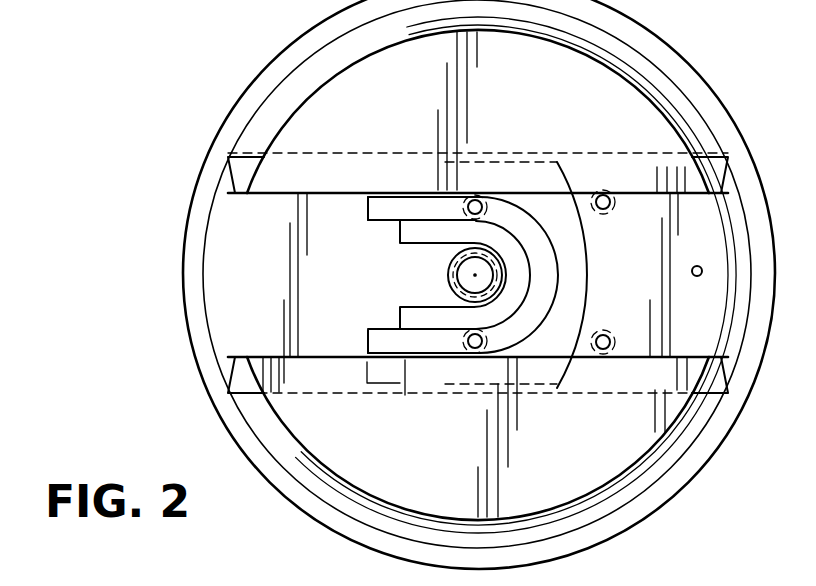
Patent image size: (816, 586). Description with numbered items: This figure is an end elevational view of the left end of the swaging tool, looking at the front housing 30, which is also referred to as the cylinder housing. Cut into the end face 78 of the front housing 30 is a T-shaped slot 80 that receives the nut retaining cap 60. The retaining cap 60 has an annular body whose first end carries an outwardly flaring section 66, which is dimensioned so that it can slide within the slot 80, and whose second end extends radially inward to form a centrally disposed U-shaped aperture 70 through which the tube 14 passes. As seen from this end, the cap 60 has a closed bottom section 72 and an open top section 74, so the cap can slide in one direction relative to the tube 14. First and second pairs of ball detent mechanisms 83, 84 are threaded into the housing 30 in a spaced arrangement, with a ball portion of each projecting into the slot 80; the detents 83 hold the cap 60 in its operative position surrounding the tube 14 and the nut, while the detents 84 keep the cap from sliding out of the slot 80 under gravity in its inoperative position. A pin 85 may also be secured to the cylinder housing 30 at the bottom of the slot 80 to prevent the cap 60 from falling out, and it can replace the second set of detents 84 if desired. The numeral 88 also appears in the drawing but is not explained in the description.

The front housing 30 is at (238, 98).
The end face 78 is at (582, 85).
The T-shaped slot 80 is at (225, 170).
The nut retaining cap 60 is at (484, 275).
The U-shaped aperture 70 is at (412, 250).
The closed bottom section 72 is at (542, 288).
The open top section 74 is at (412, 297).
The tube 14 is at (470, 274).
The first pair of ball detent mechanisms 83 is at (474, 190).
The second pair of ball detent mechanisms 84 is at (603, 190).
The pin 85 is at (696, 278).
The outwardly flaring section 66 is at (405, 388).
The housing element 88 is at (229, 4).